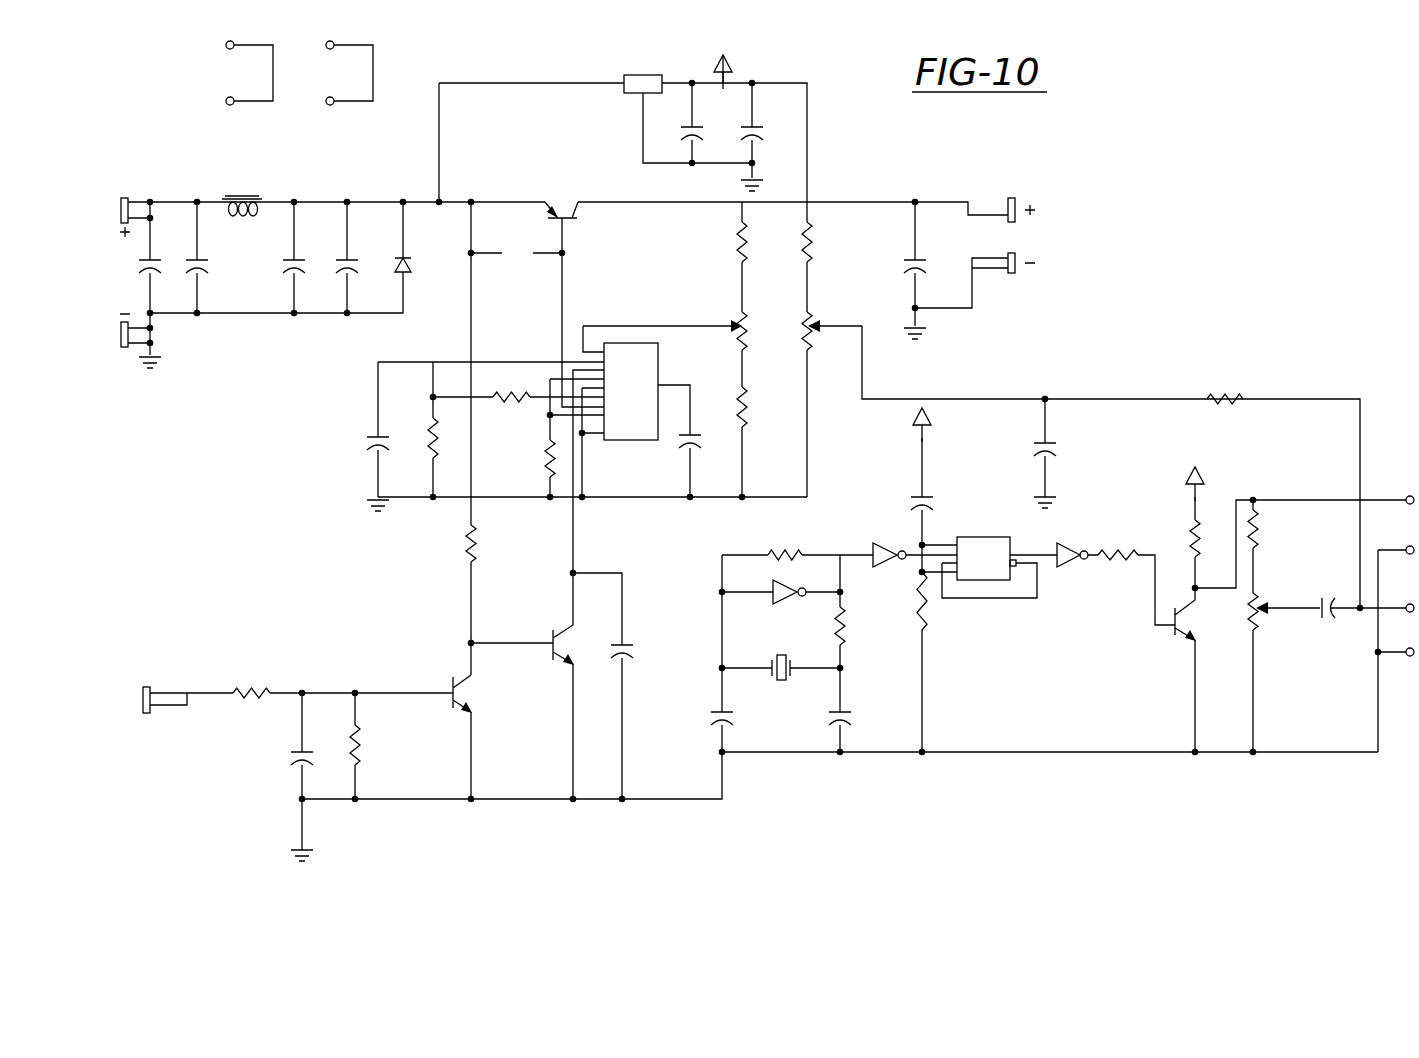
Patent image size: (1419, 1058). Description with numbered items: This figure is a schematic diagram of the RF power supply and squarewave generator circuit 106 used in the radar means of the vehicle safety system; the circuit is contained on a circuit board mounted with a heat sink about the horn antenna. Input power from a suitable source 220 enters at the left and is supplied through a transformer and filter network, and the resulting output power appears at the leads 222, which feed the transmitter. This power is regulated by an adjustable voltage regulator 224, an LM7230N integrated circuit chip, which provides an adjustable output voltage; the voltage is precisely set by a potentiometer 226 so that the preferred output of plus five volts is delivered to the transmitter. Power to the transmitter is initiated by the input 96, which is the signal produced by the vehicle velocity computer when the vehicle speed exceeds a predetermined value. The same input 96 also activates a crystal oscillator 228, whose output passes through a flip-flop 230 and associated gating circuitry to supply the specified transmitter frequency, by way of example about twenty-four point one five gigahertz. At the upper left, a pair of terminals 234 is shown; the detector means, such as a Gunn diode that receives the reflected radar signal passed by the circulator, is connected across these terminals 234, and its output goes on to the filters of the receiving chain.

The input signal 96 is at (142, 687).
The RF power supply and squarewave generator circuit 106 is at (488, 77).
The input power source 220 is at (125, 197).
The output power leads 222 is at (1030, 240).
The adjustable voltage regulator 224 is at (630, 357).
The potentiometer 226 is at (740, 318).
The crystal oscillator 228 is at (780, 682).
The flip-flop 230 is at (992, 577).
The terminals 234 is at (238, 85).